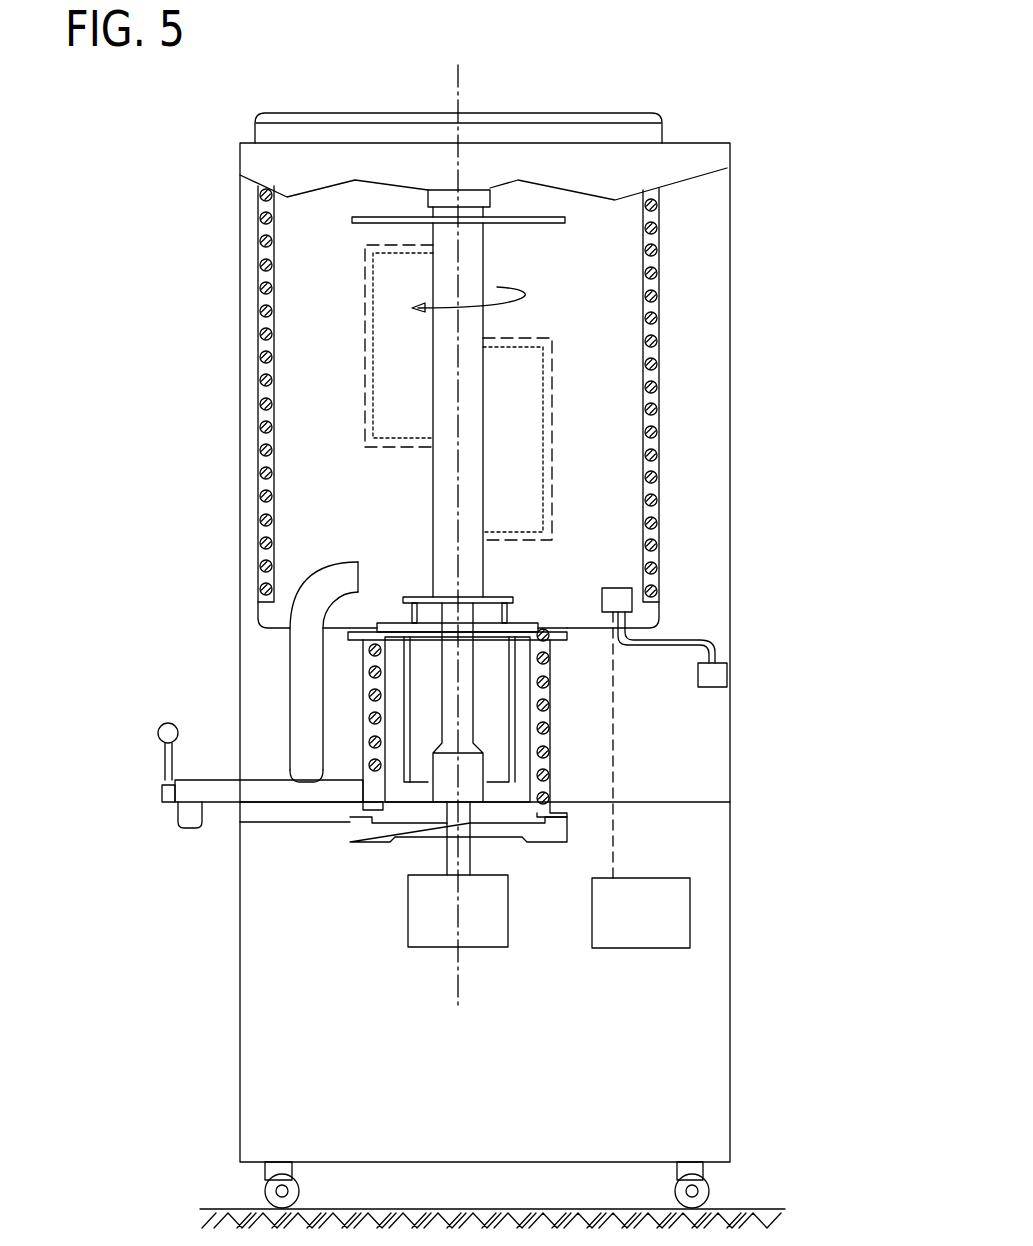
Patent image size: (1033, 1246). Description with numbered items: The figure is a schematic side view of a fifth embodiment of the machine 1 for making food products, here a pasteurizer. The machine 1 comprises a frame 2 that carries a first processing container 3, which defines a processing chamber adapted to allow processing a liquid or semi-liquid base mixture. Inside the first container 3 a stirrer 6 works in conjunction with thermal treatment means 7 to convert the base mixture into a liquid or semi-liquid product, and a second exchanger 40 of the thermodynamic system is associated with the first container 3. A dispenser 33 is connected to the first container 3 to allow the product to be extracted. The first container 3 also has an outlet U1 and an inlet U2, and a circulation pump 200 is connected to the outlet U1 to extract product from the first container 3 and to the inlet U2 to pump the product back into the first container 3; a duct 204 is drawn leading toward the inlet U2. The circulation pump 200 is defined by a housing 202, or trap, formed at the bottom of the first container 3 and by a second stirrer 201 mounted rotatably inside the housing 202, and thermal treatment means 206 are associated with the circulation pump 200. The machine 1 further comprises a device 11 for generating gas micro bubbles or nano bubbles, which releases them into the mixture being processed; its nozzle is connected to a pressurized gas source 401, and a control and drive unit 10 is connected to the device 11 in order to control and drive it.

The machine for making food products 1 is at (626, 95).
The frame 2 is at (738, 1001).
The first processing container 3 is at (596, 298).
The stirrer 6 is at (558, 383).
The thermal treatment means 7 is at (250, 302).
The control and drive unit 10 is at (652, 925).
The device for generating gas micro bubbles or nano bubbles 11 is at (641, 609).
The dispenser 33 is at (207, 843).
The second exchanger 40 is at (668, 428).
The circulation pump 200 is at (461, 775).
The second stirrer 201 is at (423, 732).
The housing 202 is at (398, 700).
The pipe 204 is at (284, 688).
The thermal treatment means 206 is at (564, 737).
The pressurized gas source 401 is at (734, 675).
The outlet U1 is at (482, 622).
The inlet U2 is at (370, 576).